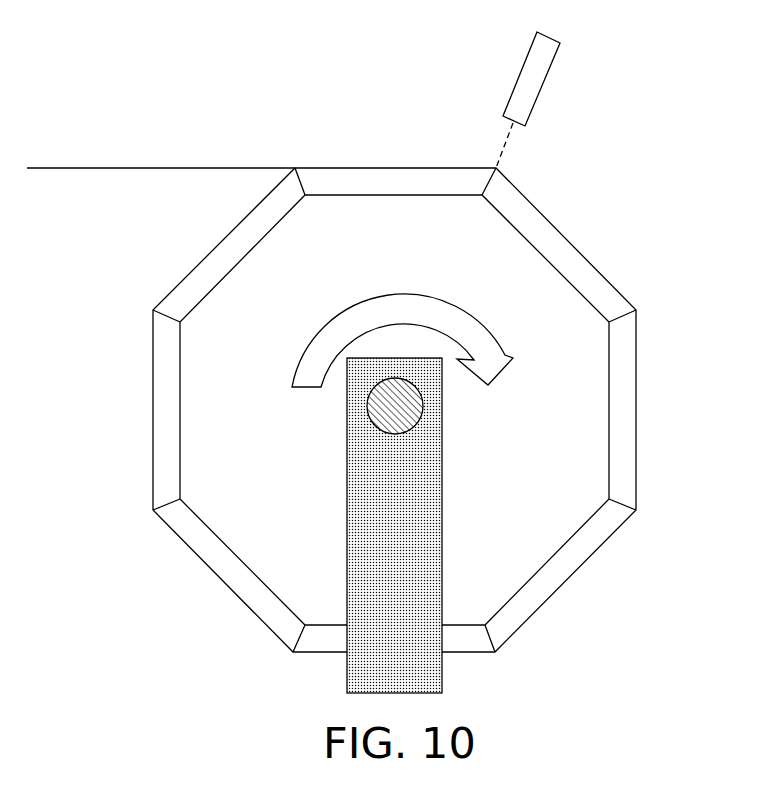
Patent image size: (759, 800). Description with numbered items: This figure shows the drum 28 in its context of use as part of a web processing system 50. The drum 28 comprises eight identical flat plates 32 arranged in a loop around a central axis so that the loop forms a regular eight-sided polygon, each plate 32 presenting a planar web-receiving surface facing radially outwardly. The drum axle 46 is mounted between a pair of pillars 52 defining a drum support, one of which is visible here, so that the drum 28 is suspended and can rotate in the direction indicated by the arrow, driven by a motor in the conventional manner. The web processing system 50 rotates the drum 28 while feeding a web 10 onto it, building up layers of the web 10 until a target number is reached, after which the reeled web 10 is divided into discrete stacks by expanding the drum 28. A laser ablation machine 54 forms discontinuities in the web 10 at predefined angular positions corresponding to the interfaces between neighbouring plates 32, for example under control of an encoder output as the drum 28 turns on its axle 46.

The web 10 is at (176, 168).
The drum 28 is at (596, 365).
The flat plate 32 is at (636, 432).
The drum axle 46 is at (420, 410).
The web processing system 50 is at (646, 263).
The pillar 52 is at (436, 517).
The laser ablation machine 54 is at (542, 87).